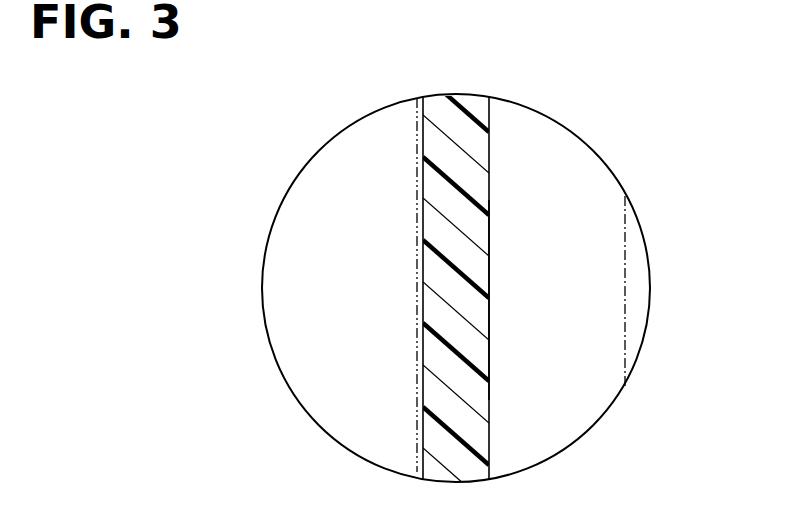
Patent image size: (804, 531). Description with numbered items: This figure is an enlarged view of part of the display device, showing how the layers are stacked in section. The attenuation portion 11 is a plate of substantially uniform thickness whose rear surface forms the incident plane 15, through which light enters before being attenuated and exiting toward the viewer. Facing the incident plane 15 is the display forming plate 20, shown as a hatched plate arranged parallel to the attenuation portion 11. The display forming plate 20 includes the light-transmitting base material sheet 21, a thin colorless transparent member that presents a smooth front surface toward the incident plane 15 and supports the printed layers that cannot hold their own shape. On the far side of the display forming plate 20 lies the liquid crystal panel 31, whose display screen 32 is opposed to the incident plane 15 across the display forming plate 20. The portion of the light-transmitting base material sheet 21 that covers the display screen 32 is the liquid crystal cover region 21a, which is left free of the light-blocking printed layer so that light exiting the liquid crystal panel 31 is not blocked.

The attenuation portion 11 is at (349, 268).
The incident plane 15 is at (421, 191).
The display forming plate 20 is at (471, 272).
The light-transmitting base material sheet 21 is at (455, 122).
The liquid crystal cover region 21a is at (489, 295).
The liquid crystal panel 31 is at (644, 234).
The display screen 32 is at (626, 232).